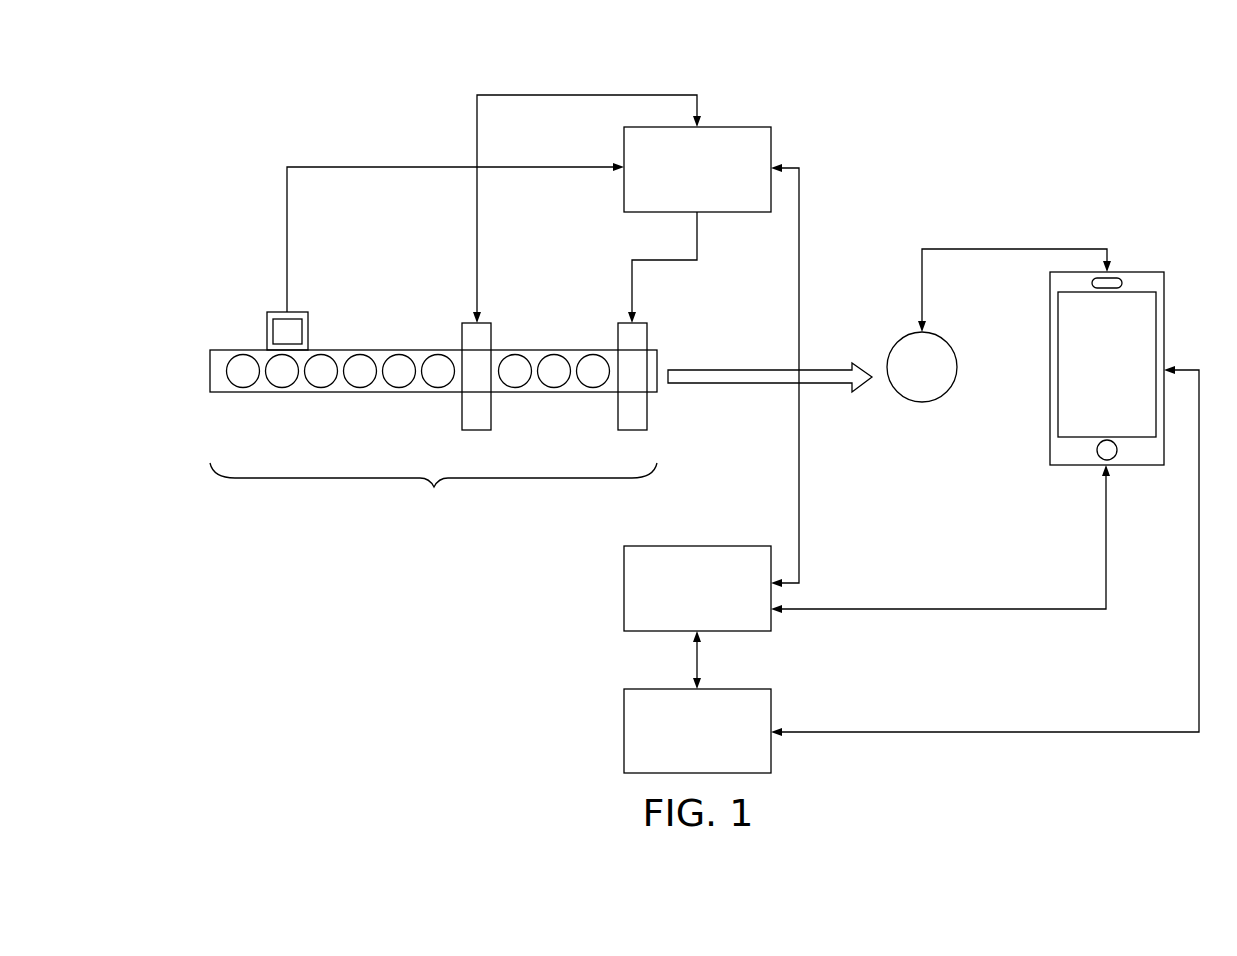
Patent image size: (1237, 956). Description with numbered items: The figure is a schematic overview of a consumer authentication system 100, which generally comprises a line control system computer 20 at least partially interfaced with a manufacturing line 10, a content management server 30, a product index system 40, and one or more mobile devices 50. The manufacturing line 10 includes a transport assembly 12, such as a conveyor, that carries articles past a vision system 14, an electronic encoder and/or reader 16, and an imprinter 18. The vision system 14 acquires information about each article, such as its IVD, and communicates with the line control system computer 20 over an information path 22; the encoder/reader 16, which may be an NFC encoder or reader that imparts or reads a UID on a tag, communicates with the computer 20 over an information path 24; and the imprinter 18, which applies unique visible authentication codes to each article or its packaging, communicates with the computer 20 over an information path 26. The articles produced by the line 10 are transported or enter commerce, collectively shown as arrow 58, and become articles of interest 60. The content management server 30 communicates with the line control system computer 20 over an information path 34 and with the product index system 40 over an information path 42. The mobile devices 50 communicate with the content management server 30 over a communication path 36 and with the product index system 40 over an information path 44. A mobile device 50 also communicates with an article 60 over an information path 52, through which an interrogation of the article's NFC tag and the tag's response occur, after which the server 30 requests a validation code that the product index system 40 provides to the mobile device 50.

The consumer authentication system 100 is at (266, 116).
The manufacturing line 10 is at (433, 489).
The transport assembly 12 is at (218, 352).
The vision system 14 is at (308, 340).
The electronic encoder and/or reader 16 is at (491, 414).
The imprinter 18 is at (618, 330).
The line control system computer 20 is at (771, 148).
The information path 22 is at (282, 215).
The information path 24 is at (472, 139).
The information path 26 is at (628, 275).
The content management server 30 is at (624, 598).
The information path 34 is at (802, 517).
The communication path 36 is at (870, 605).
The product index system 40 is at (624, 738).
The information path 42 is at (702, 659).
The information path 44 is at (869, 728).
The mobile device 50 is at (1164, 334).
The information path 52 is at (1085, 246).
The arrow 58 is at (825, 370).
The article of interest 60 is at (903, 339).